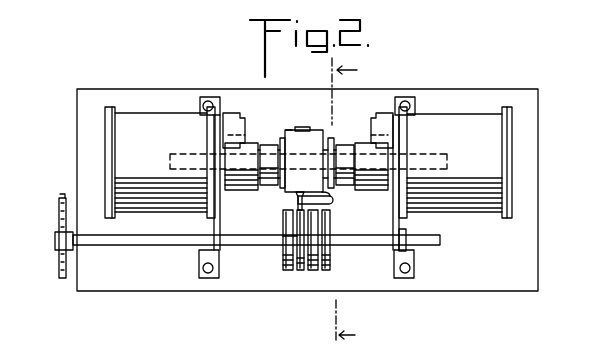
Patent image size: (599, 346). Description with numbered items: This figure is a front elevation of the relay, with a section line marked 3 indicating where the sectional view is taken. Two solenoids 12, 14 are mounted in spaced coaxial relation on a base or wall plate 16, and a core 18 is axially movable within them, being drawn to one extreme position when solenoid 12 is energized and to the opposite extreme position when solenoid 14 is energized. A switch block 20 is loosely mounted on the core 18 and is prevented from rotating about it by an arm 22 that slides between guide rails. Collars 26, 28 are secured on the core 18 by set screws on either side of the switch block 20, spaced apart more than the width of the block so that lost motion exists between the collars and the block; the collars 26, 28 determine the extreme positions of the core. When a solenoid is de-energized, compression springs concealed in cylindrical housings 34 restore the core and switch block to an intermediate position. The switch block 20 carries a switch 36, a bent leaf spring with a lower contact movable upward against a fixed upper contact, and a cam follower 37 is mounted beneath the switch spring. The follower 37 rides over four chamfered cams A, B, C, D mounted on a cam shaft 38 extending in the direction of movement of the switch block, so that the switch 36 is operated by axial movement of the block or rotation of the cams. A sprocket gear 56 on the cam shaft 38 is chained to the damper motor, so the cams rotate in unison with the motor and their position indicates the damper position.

The solenoid 12 is at (138, 114).
The solenoid 14 is at (456, 125).
The base or wall plate 16 is at (519, 105).
The core 18 is at (423, 160).
The switch block 20 is at (290, 128).
The arm 22 is at (306, 127).
The collar 26 is at (268, 143).
The collar 28 is at (345, 145).
The cylindrical housing 34 is at (249, 191).
The switch 36 is at (298, 199).
The cam follower 37 is at (285, 240).
The cam shaft 38 is at (233, 248).
The sprocket gear 56 is at (58, 257).
The cam A is at (285, 272).
The cam B is at (300, 272).
The cam C is at (315, 272).
The cam D is at (327, 272).
The section line 3- 3 is at (354, 202).